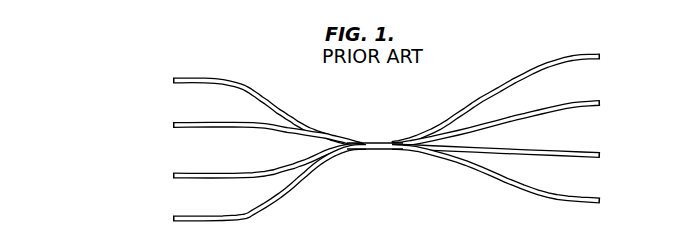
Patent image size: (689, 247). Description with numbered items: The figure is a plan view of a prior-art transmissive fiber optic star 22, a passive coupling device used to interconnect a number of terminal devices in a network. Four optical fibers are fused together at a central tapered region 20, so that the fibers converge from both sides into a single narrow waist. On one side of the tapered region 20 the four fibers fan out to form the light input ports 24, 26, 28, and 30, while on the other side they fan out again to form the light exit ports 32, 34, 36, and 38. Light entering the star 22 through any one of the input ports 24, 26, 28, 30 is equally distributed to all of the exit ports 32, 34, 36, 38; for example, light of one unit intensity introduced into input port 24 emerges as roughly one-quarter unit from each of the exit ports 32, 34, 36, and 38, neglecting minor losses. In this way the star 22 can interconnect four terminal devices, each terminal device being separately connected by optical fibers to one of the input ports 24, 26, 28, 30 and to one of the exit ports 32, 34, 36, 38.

The tapered region 20 is at (378, 141).
The star 22 is at (102, 150).
The light input port 24 is at (173, 79).
The light input port 26 is at (173, 124).
The light input port 28 is at (173, 176).
The light input port 30 is at (173, 219).
The light exit port 32 is at (604, 60).
The light exit port 34 is at (604, 101).
The light exit port 36 is at (604, 151).
The light exit port 38 is at (604, 199).